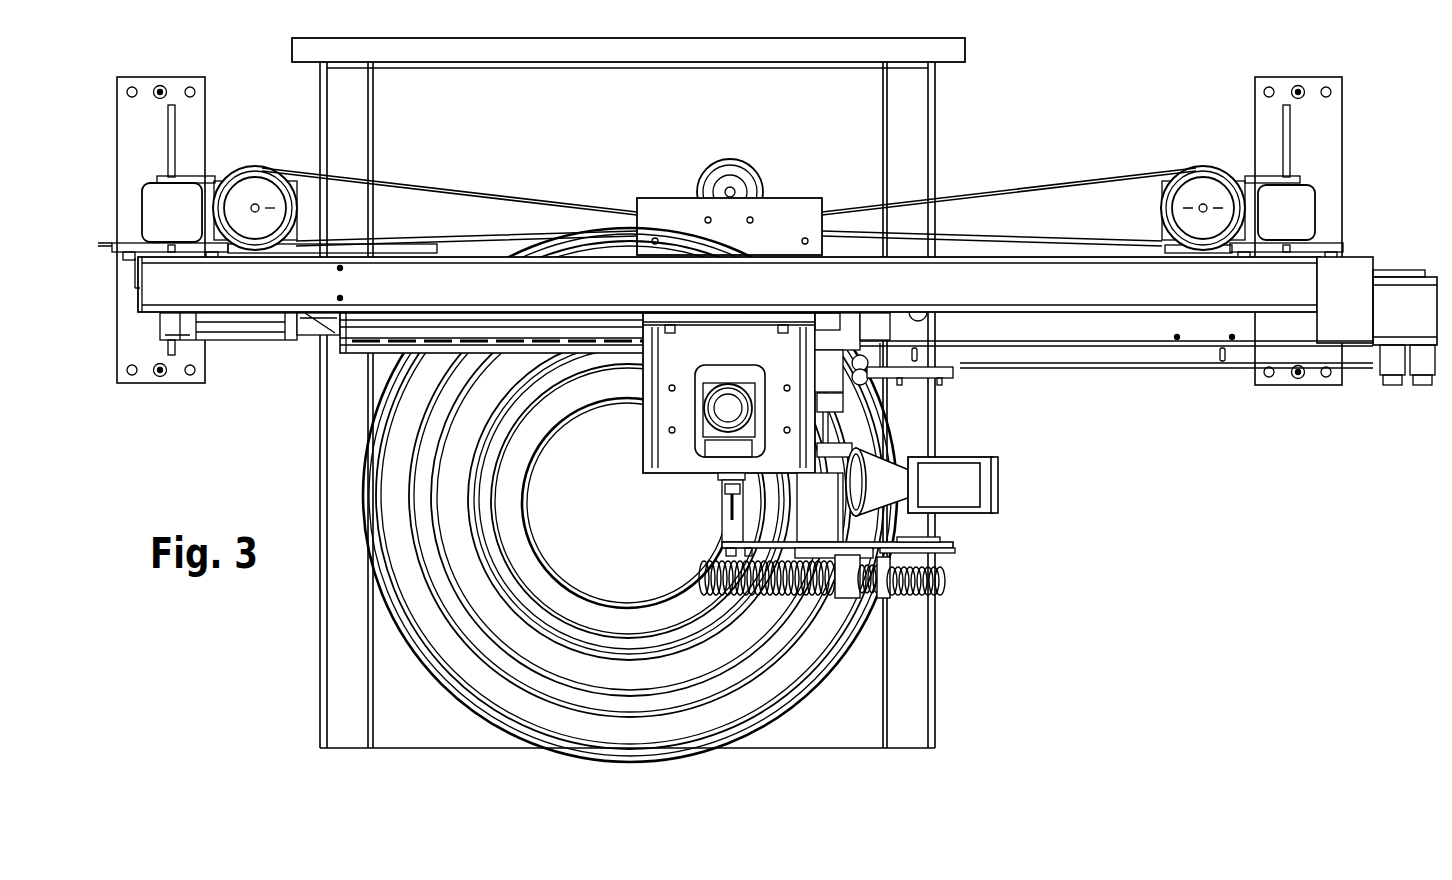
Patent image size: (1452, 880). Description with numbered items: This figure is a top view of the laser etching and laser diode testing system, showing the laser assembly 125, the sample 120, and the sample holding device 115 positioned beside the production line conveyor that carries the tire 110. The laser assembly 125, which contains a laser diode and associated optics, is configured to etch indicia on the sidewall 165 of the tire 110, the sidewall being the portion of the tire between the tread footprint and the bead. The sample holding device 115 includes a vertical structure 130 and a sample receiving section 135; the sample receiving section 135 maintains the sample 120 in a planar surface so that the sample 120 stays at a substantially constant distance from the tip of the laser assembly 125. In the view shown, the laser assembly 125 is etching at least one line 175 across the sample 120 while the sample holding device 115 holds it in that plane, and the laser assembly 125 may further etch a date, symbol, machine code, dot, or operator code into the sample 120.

The tire 110 is at (670, 763).
The sidewall 165 is at (752, 693).
The sample holding device 115 is at (1031, 509).
The sample 120 is at (960, 497).
The laser assembly 125 is at (893, 478).
The vertical structure 130 is at (907, 512).
The sample receiving section 135 is at (987, 505).
The line 175 is at (957, 480).